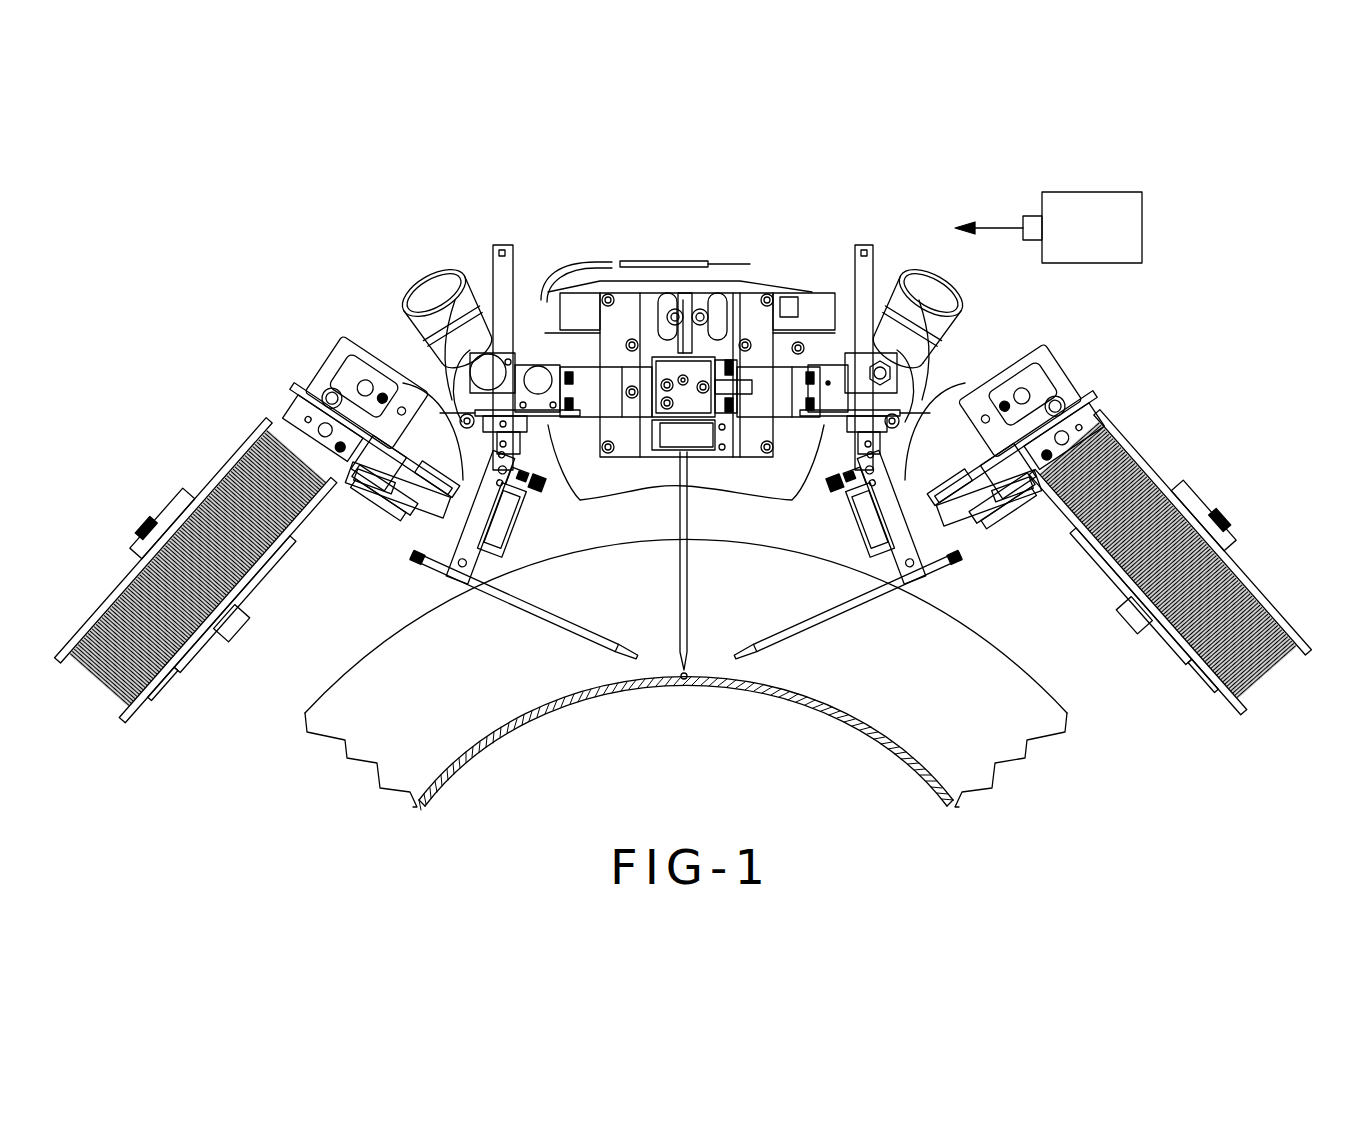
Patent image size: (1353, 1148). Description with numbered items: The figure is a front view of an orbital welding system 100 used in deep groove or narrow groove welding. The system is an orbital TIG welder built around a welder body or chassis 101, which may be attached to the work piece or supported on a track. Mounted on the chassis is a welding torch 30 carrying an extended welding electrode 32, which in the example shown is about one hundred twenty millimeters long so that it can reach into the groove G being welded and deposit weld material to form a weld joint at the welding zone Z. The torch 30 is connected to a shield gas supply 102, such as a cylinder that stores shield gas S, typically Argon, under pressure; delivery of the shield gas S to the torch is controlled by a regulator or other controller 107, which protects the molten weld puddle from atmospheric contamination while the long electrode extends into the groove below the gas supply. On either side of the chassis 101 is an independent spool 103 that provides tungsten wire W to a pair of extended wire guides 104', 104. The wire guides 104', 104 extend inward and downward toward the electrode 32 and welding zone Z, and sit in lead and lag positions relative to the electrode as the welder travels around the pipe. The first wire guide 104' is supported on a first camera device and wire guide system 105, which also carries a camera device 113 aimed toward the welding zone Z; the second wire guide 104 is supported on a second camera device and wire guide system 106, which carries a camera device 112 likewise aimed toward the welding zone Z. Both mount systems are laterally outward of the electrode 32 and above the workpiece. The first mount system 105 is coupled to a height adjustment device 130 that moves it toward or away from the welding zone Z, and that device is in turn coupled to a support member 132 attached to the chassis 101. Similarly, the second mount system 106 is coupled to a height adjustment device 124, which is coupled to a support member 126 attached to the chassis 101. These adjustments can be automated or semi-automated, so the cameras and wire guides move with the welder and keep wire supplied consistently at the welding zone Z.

The welding system 100 is at (308, 245).
The welder body or chassis 101 is at (762, 326).
The shield gas supply 102 is at (1112, 192).
The spool 103 is at (230, 474).
The wire guide 104 is at (847, 610).
The wire guide 104' is at (524, 610).
The first camera device and wire guide system 105 is at (470, 550).
The second camera device and wire guide system 106 is at (900, 550).
The regulator or other controller 107 is at (1030, 215).
The camera device 112 is at (922, 505).
The camera device 113 is at (438, 500).
The height adjustment device 124 is at (832, 405).
The support member 126 is at (778, 394).
The height adjustment device 130 is at (540, 405).
The support member 132 is at (594, 394).
The welding torch 30 is at (672, 366).
The welding electrode 32 is at (680, 632).
The tungsten wire W is at (107, 683).
The welding zone Z is at (685, 673).
The groove G is at (903, 722).
The shield gas S is at (990, 228).